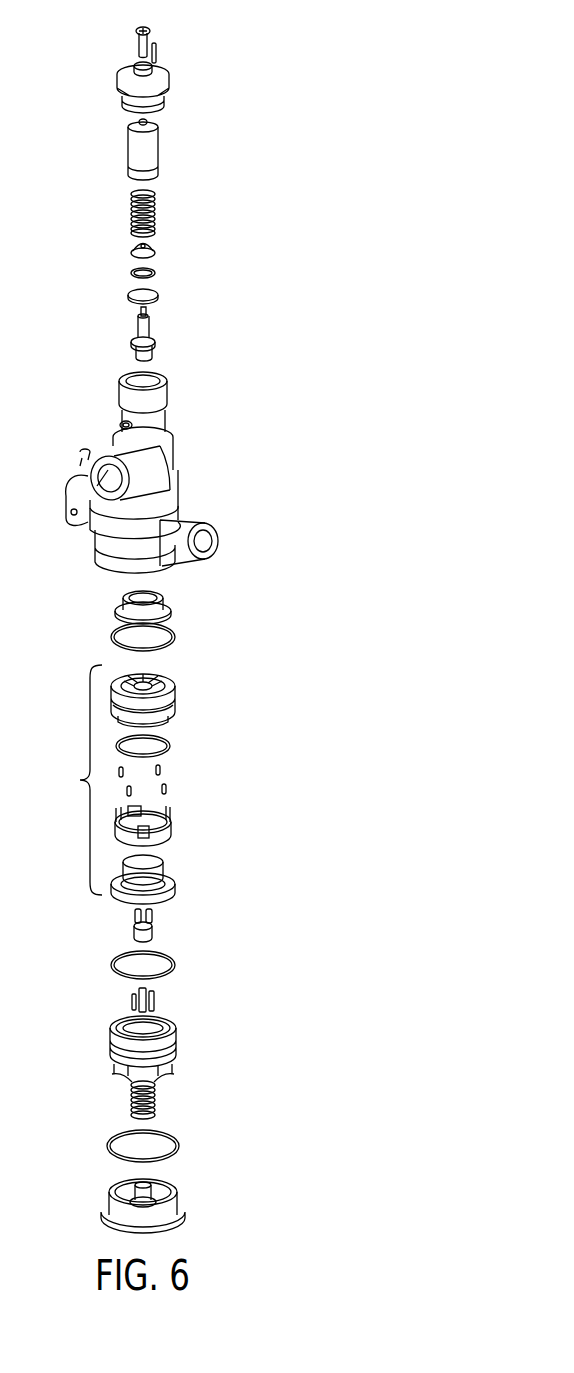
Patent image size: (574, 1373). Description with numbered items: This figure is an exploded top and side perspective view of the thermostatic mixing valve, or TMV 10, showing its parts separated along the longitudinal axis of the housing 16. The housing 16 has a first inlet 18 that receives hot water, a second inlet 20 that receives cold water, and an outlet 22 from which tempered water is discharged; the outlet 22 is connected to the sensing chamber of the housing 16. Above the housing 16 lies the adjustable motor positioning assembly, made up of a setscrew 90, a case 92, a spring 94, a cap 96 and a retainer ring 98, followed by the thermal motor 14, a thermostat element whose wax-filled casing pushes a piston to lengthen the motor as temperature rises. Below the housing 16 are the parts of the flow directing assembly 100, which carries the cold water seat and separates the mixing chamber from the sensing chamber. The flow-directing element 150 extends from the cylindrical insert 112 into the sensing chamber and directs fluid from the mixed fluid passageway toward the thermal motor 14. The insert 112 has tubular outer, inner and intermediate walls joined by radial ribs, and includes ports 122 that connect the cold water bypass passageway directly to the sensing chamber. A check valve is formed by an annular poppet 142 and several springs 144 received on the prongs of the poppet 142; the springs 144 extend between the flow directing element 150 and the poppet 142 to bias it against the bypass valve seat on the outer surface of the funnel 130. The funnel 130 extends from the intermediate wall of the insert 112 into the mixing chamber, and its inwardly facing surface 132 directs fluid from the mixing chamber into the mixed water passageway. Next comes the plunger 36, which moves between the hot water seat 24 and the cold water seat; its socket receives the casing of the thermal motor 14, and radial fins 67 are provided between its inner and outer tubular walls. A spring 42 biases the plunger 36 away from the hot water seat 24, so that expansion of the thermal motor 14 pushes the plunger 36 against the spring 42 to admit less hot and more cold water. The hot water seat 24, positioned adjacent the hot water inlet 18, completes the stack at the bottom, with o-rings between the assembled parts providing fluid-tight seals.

The TMV 10 is at (154, 465).
The thermal motor 14 is at (152, 326).
The housing 16 is at (170, 393).
The first inlet 18 is at (218, 545).
The second inlet 20 is at (70, 492).
The outlet 22 is at (108, 480).
The hot water seat 24 is at (177, 1200).
The plunger 36 is at (169, 1027).
The spring 42 is at (156, 1104).
The radial fins 67 is at (162, 1072).
The setscrew 90 is at (152, 33).
The case 92 is at (160, 150).
The spring 94 is at (157, 206).
The cap 96 is at (152, 247).
The retainer ring 98 is at (156, 275).
The flow directing assembly 100 is at (80, 780).
The cylindrical insert 112 is at (176, 695).
The ports 122 is at (156, 683).
The funnel 130 is at (166, 879).
The inwardly facing surface 132 is at (150, 860).
The poppet 142 is at (172, 827).
The spring 144 is at (168, 789).
The flow-directing element 150 is at (170, 602).